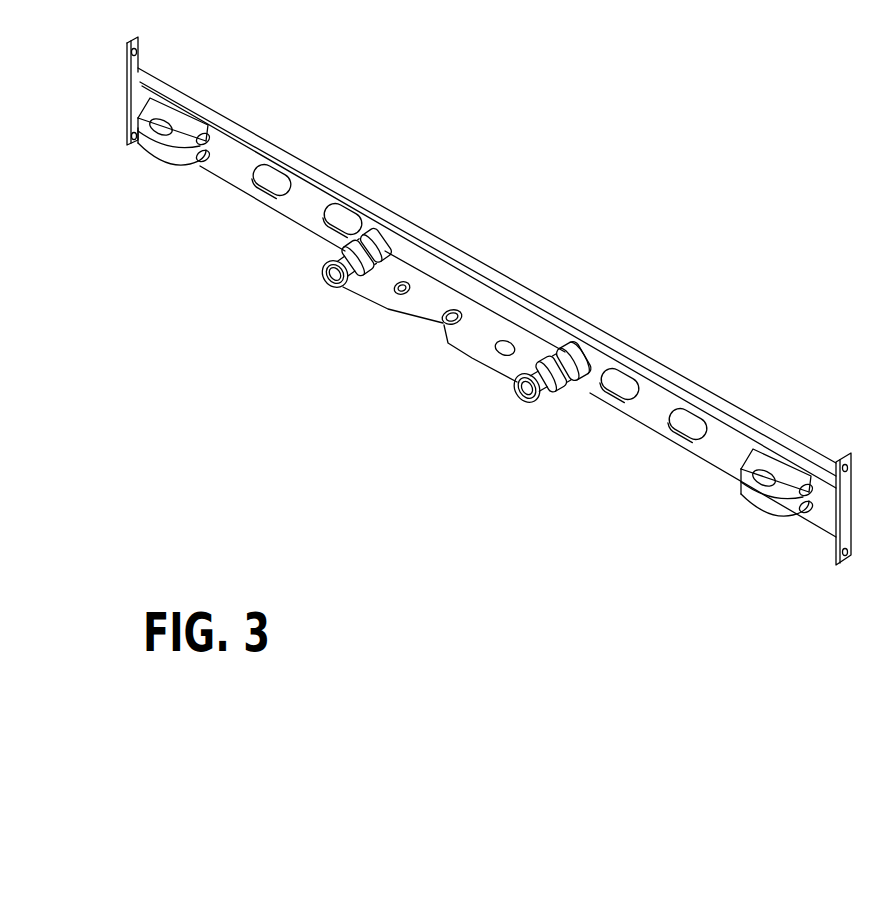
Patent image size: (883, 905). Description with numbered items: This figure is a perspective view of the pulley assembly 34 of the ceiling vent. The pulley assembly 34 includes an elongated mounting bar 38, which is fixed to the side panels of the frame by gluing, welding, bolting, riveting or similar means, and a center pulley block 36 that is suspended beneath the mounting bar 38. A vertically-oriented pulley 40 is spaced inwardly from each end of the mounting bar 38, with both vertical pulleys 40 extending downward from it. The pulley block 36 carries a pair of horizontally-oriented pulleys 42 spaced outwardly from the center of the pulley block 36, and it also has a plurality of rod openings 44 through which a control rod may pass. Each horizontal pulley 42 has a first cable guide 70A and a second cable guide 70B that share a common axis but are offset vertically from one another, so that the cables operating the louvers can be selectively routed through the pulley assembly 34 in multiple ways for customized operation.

The pulley assembly 34 is at (556, 226).
The center pulley block 36 is at (466, 361).
The mounting bar 38 is at (278, 142).
The vertically-oriented pulley 40 is at (163, 166).
The horizontally-oriented pulley 42 is at (330, 287).
The rod opening 44 is at (405, 296).
The first cable guide 70A is at (577, 390).
The second cable guide 70B is at (323, 244).